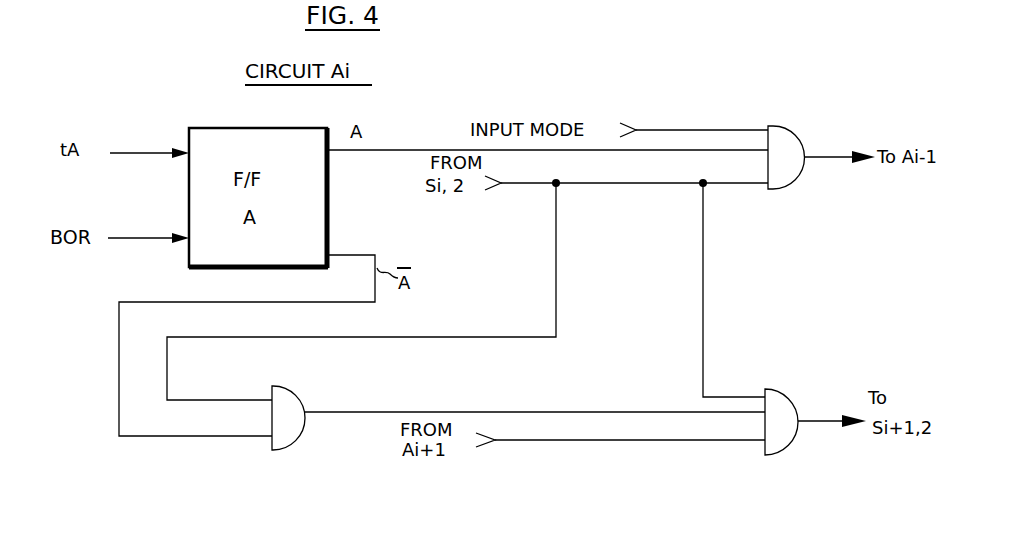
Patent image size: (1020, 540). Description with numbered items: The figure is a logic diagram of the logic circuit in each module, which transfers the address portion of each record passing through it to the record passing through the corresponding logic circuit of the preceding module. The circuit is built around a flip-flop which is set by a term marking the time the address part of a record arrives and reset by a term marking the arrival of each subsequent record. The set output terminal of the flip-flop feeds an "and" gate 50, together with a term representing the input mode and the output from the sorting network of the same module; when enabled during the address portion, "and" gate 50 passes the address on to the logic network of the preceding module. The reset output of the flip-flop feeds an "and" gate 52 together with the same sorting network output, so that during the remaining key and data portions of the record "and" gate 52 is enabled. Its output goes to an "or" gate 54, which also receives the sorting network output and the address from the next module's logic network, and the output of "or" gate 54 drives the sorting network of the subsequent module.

The "and" gate 50 is at (786, 142).
The "and" gate 52 is at (288, 406).
The "or" gate 54 is at (784, 409).